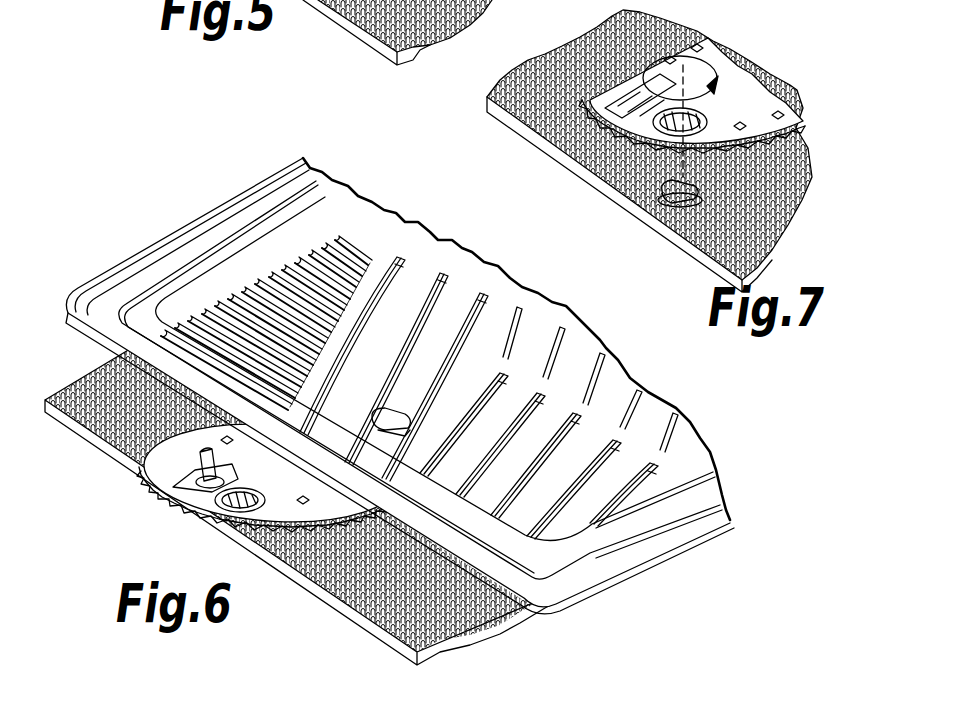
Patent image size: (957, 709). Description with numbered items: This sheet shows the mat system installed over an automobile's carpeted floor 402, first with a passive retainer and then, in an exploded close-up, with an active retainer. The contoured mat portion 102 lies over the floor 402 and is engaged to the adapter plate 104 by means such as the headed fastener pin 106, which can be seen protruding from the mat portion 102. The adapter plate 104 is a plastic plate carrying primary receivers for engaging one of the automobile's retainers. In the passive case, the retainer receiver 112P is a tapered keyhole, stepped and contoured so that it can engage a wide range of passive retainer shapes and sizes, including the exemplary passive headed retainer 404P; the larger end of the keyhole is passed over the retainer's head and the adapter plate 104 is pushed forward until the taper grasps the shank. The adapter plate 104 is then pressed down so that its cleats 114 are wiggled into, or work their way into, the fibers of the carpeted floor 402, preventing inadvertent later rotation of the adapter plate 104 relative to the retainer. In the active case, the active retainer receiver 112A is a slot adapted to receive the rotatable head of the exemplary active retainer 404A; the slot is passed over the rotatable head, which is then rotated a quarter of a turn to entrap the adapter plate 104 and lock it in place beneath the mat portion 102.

In FIG. 6, the contoured mat portion 102 is at (199, 216).
In FIG. 6, the carpeted floor 402 is at (72, 378).
In FIG. 7, the carpeted floor 402 is at (782, 229).
In FIG. 6, the passive headed retainer 404P is at (200, 454).
In FIG. 6, the retainer receiver 112P is at (166, 500).
In FIG. 6, the cleats 114 is at (290, 547).
In FIG. 6, the headed fastener pin 106 is at (412, 418).
In FIG. 7, the active retainer receiver 112A is at (713, 118).
In FIG. 7, the adapter plate 104 is at (799, 114).
In FIG. 7, the active retainer 404A is at (690, 245).